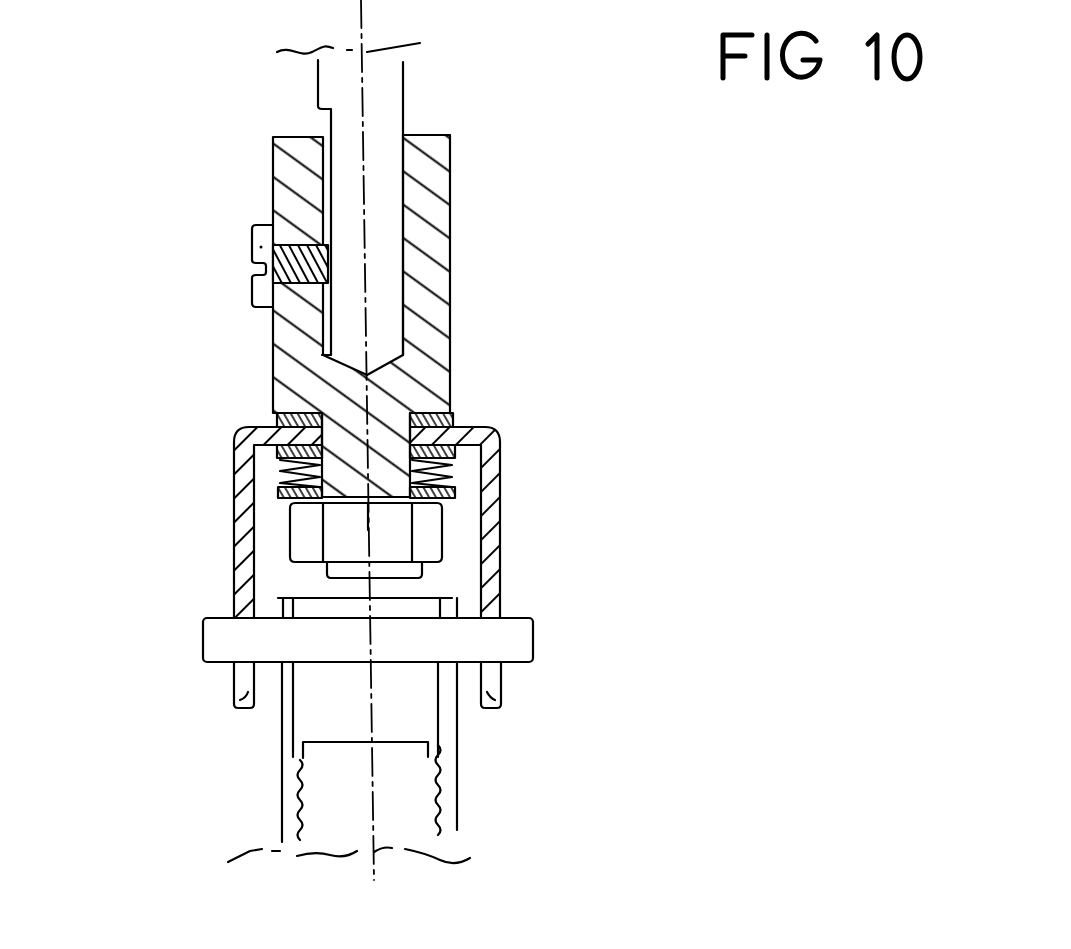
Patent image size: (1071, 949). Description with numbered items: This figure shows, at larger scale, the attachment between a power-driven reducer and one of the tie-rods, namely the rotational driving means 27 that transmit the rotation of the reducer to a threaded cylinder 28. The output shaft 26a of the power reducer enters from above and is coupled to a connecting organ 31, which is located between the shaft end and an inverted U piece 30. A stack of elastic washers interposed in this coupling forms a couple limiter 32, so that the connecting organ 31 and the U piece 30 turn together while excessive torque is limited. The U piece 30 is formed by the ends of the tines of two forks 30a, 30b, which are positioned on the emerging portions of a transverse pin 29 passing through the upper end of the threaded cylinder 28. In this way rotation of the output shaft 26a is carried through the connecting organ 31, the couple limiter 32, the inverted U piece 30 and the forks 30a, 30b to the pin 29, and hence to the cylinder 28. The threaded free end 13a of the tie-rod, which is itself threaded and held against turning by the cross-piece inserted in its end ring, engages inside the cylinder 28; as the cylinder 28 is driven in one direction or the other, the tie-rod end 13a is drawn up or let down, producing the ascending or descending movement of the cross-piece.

The output shaft 26a is at (382, 85).
The connecting organ 31 is at (430, 223).
The couple limiter 32 is at (440, 467).
The inverted U piece 30 is at (371, 609).
The rotational driving means 27 is at (387, 651).
The transverse pin 29 is at (512, 642).
The fork 30a is at (245, 698).
The fork 30b is at (492, 693).
The threaded cylinder 28 is at (442, 786).
The free end of the tie-rod 13a is at (332, 792).